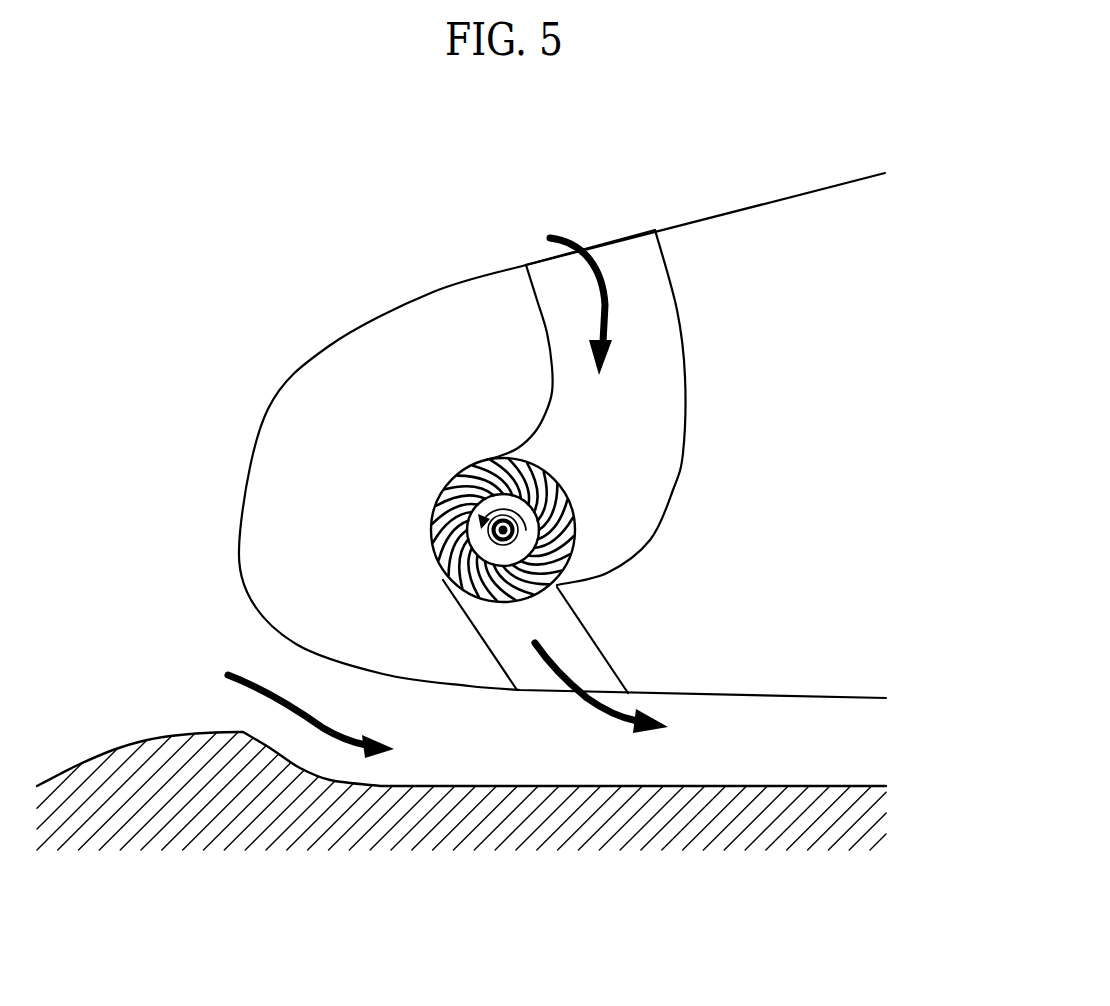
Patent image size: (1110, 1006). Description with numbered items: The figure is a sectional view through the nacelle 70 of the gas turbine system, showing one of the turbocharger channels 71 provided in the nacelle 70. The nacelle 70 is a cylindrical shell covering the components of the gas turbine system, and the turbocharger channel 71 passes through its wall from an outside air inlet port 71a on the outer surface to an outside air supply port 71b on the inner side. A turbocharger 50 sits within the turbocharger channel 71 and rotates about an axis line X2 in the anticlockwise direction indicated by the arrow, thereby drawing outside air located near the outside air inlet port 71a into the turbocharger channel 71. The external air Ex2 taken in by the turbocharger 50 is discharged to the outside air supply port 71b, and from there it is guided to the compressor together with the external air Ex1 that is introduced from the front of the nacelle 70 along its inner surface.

The nacelle 70 is at (337, 349).
The turbocharger channel 71 is at (681, 451).
The outside air inlet port 71a is at (527, 252).
The outside air supply port 71b is at (612, 668).
The turbocharger 50 is at (440, 476).
The axis line X2 is at (503, 530).
The external air Ex1 is at (250, 685).
The external air Ex2 is at (608, 310).